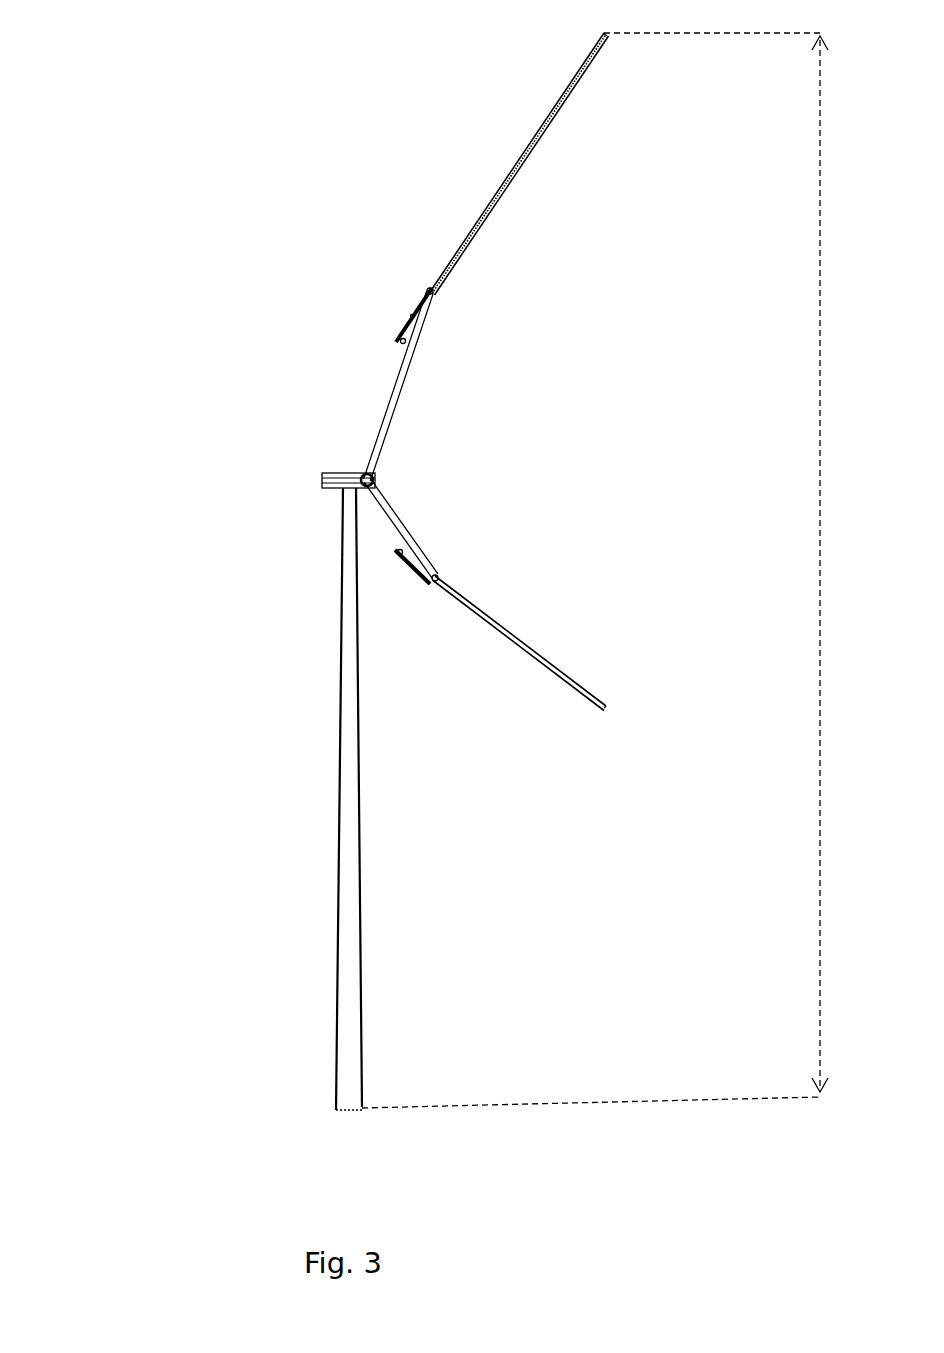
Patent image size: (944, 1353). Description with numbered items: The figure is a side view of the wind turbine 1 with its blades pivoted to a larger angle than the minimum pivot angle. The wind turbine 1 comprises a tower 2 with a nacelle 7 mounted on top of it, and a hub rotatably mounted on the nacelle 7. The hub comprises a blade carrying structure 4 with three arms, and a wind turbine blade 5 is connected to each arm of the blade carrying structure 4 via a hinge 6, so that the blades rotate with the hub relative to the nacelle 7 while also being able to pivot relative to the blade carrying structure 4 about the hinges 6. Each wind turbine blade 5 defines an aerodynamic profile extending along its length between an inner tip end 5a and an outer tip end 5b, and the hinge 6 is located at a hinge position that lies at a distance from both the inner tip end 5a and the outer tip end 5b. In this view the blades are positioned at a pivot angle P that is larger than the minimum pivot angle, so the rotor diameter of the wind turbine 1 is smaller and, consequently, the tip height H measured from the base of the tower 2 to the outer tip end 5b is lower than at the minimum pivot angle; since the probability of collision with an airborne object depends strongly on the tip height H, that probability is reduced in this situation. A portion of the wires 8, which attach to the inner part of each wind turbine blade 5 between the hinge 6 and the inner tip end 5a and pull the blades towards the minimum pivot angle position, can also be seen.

The wind turbine 1 is at (150, 247).
The tower 2 is at (350, 956).
The blade carrying structure 4 is at (388, 430).
The wind turbine blade 5 is at (526, 149).
The inner tip end 5a is at (396, 336).
The outer tip end 5b is at (606, 33).
The hinge 6 is at (430, 292).
The nacelle 7 is at (322, 480).
The wire 8 is at (404, 340).
The pivot angle P is at (412, 316).
The tip height H is at (605, 570).